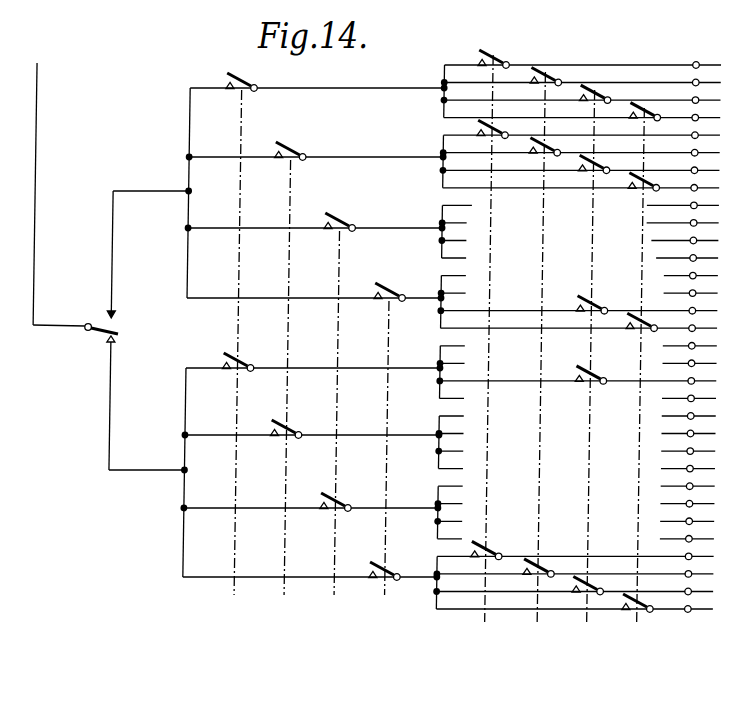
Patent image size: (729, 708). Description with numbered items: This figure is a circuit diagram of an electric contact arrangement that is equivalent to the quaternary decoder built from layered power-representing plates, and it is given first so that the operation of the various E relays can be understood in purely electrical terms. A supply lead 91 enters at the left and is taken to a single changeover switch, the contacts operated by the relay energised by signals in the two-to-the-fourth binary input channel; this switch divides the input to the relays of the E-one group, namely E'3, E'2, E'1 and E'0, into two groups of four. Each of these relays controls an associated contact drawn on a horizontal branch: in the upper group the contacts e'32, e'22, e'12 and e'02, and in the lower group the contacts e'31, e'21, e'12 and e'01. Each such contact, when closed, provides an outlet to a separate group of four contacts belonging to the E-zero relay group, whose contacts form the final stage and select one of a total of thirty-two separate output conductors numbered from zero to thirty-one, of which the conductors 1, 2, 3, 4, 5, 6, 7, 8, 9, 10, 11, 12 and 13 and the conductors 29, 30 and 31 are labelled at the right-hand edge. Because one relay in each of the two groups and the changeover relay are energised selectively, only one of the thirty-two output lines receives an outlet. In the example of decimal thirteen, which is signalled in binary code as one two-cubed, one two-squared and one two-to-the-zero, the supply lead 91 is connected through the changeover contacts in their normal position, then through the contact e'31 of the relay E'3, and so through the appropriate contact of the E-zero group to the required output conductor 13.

The supply lead 91 is at (38, 63).
The output conductor 1 is at (699, 601).
The output conductor 2 is at (699, 584).
The output conductor 3 is at (699, 566).
The output conductor 4 is at (699, 549).
The output conductor 5 is at (700, 531).
The output conductor 6 is at (700, 514).
The output conductor 7 is at (700, 496).
The output conductor 8 is at (700, 478).
The output conductor 9 is at (701, 461).
The output conductor 10 is at (702, 443).
The output conductor 11 is at (702, 426).
The output conductor 12 is at (702, 408).
The output conductor 13 is at (703, 391).
The output conductor 29 is at (707, 110).
The output conductor 30 is at (707, 92).
The output conductor 31 is at (707, 75).
The relay contact e'32 is at (317, 68).
The relay contact e'22 is at (316, 144).
The relay contact e'12 is at (313, 351).
The relay contact e'02 is at (314, 285).
The relay contact e'31 is at (313, 350).
The relay contact e'21 is at (312, 422).
The relay contact e'01 is at (310, 565).
The relay of the E1 group E'3 is at (223, 356).
The relay of the E1 group E'2 is at (273, 391).
The relay of the E1 group E'1 is at (322, 426).
The relay of the E1 group E'0 is at (373, 461).